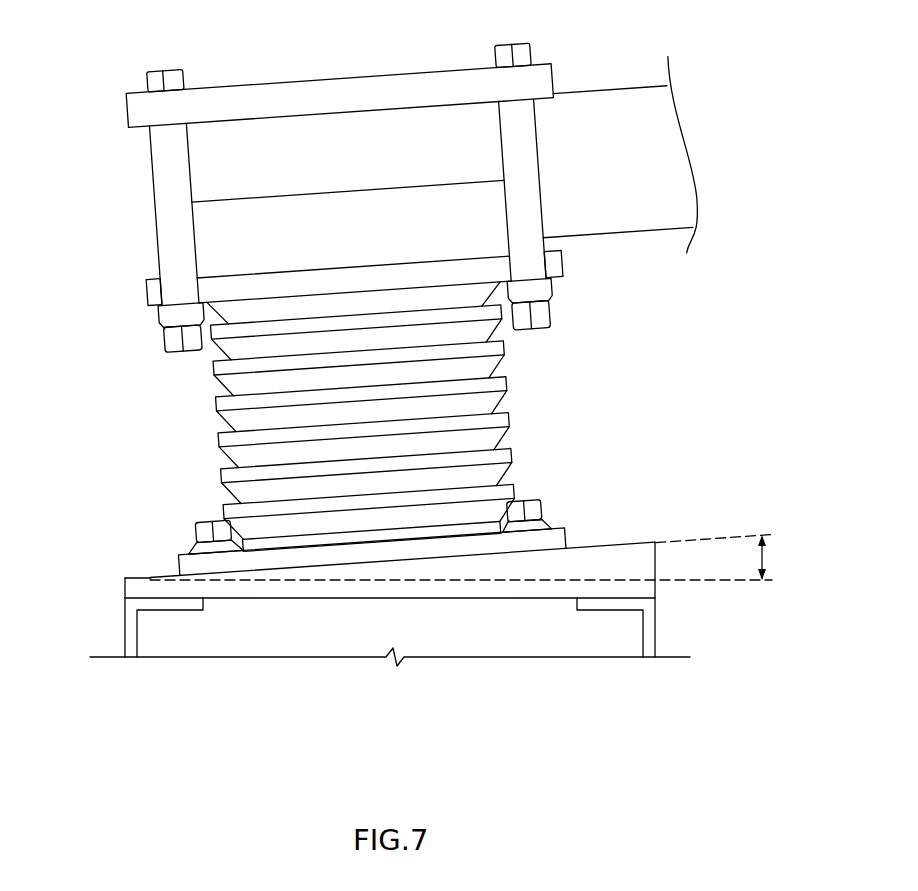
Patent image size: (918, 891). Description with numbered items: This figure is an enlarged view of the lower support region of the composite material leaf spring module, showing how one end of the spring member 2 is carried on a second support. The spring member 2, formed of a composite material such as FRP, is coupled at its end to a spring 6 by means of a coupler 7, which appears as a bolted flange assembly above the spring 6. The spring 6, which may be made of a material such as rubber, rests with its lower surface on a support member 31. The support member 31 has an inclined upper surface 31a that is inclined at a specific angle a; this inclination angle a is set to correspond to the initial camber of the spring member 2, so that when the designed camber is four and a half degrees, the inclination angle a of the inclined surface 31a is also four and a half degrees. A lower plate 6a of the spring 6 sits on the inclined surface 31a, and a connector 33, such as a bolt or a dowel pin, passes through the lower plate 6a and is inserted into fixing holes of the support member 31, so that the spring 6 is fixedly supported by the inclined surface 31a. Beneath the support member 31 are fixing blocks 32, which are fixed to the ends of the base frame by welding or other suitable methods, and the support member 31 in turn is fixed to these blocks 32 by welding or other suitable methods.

The spring member 2 is at (611, 107).
The coupler 7 is at (118, 210).
The spring 6 is at (190, 425).
The lower plate 6a is at (558, 538).
The connector 33 is at (208, 533).
The support member 31 is at (647, 588).
The inclined upper surface 31a is at (151, 578).
The fixing block 32 is at (131, 626).
The inclination angle a is at (770, 557).